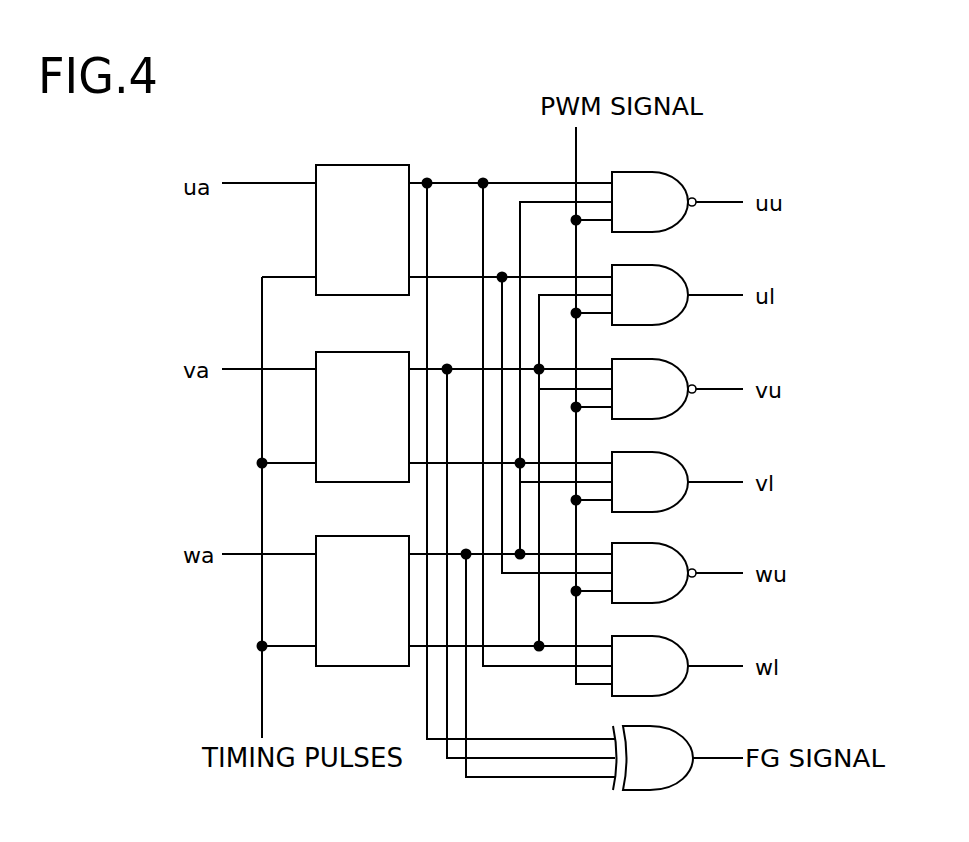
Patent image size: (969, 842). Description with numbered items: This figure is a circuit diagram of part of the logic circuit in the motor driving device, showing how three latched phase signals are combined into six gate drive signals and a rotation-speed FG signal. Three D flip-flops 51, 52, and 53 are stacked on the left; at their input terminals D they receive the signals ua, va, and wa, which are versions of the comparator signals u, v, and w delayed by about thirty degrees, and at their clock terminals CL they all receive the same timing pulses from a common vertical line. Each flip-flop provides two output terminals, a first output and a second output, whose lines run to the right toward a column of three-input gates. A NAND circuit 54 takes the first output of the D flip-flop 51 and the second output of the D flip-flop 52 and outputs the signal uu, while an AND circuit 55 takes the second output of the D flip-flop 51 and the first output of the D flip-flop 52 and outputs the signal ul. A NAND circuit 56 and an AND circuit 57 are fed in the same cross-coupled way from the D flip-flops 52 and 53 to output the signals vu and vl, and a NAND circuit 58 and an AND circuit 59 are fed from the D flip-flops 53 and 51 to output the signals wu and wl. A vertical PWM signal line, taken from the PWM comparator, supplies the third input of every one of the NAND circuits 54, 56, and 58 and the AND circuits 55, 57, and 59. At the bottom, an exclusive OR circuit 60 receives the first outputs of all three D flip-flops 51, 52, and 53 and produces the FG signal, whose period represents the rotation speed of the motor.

The D flip-flop 51 is at (362, 165).
The D flip-flop 52 is at (362, 352).
The D flip-flop 53 is at (362, 536).
The NAND circuit 54 is at (652, 172).
The AND circuit 55 is at (652, 265).
The NAND circuit 56 is at (652, 359).
The AND circuit 57 is at (652, 452).
The NAND circuit 58 is at (652, 543).
The AND circuit 59 is at (652, 636).
The exclusive OR circuit 60 is at (652, 728).